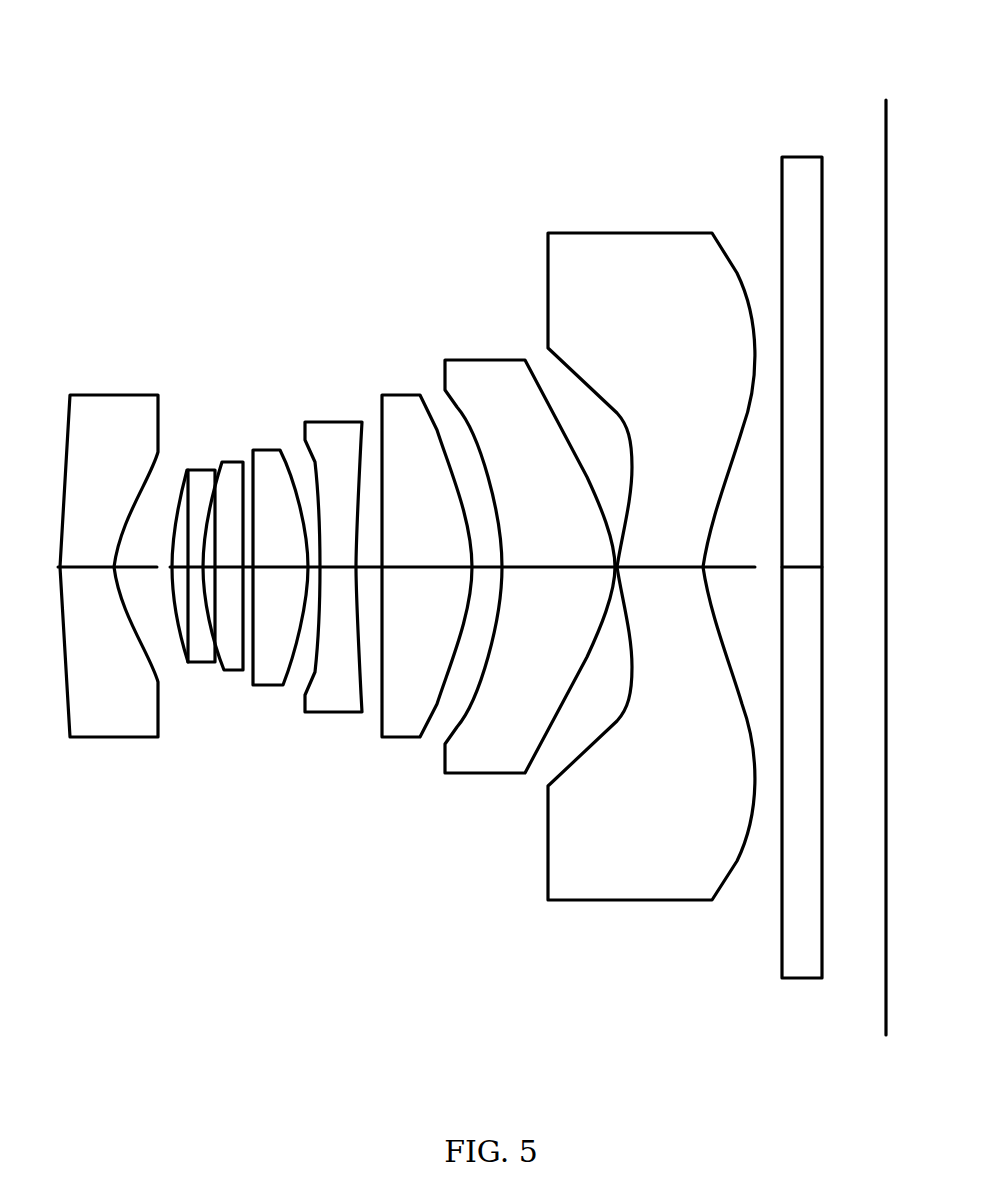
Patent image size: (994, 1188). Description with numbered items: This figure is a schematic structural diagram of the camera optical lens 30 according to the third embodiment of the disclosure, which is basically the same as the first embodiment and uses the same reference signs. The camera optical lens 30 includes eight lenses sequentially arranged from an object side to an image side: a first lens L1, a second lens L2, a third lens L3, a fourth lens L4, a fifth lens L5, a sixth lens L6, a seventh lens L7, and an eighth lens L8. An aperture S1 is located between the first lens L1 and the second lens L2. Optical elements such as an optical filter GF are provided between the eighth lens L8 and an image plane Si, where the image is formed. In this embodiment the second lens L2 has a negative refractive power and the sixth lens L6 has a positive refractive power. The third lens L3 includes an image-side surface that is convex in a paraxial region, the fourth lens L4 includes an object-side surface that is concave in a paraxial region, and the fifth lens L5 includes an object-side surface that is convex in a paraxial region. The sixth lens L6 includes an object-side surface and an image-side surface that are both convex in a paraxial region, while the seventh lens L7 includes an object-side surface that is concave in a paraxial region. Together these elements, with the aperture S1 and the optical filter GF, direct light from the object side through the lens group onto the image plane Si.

The camera optical lens 30 is at (492, 35).
The first lens L1 is at (109, 553).
The second lens L2 is at (193, 554).
The third lens L3 is at (223, 554).
The fourth lens L4 is at (280, 555).
The fifth lens L5 is at (333, 555).
The sixth lens L6 is at (427, 555).
The seventh lens L7 is at (530, 553).
The eighth lens L8 is at (651, 554).
The aperture S1 is at (199, 679).
The optical filter GF is at (802, 554).
The image plane Si is at (875, 553).